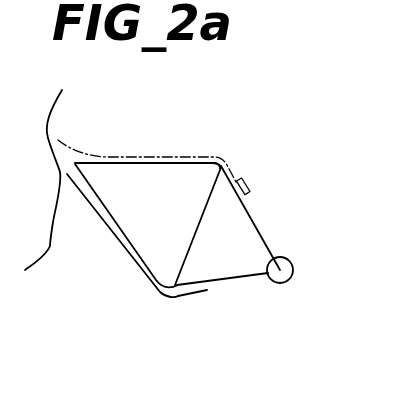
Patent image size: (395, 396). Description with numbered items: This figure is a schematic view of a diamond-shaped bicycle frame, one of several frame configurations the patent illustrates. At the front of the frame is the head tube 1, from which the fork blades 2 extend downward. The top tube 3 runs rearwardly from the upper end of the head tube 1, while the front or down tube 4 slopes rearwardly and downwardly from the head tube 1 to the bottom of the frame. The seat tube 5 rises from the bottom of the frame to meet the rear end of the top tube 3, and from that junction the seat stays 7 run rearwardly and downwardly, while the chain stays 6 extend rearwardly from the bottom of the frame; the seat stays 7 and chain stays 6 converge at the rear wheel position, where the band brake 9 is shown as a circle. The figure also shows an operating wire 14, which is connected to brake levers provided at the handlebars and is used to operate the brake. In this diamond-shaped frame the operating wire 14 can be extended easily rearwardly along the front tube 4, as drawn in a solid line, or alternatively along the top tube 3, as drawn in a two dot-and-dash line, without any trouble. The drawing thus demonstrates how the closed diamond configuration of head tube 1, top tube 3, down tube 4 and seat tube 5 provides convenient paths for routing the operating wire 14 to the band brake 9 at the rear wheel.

The head tube 1 is at (75, 163).
The fork blades 2 is at (45, 239).
The top tube 3 is at (118, 163).
The front or down tube 4 is at (135, 252).
The seat tube 5 is at (216, 157).
The chain stays 6 is at (240, 280).
The seat stays 7 is at (265, 242).
The band brake 9 is at (295, 270).
The operating wire 14 is at (145, 152).